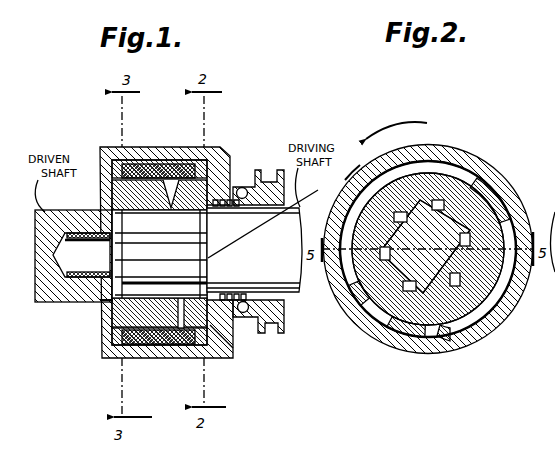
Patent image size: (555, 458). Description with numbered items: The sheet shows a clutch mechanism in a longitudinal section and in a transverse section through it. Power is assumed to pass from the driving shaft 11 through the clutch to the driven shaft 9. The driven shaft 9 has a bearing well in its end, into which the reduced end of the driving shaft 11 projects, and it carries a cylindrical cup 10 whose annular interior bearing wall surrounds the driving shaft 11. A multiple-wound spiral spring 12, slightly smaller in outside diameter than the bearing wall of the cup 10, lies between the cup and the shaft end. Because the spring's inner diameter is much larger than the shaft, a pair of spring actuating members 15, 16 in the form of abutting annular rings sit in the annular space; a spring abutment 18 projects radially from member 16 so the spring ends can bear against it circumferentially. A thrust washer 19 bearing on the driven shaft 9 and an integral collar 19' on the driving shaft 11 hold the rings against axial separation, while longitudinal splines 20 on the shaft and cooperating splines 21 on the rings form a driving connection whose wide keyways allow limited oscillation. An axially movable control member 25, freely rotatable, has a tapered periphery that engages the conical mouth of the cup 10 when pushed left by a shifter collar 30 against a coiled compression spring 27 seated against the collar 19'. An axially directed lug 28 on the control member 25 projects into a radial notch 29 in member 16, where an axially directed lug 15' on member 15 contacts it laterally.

In FIG. 1, the driven shaft 9 is at (50, 306).
In FIG. 1, the cylindrical cup 10 is at (108, 148).
In FIG. 2, the cylindrical cup 10 is at (482, 157).
In FIG. 1, the driving shaft 11 is at (278, 266).
In FIG. 2, the driving shaft 11 is at (503, 223).
In FIG. 1, the multiple-wound spiral spring 12 is at (104, 350).
In FIG. 2, the multiple-wound spiral spring 12 is at (500, 288).
In FIG. 1, the spring actuating member 15 is at (85, 283).
In FIG. 2, the axially directed lug 15' is at (408, 365).
In FIG. 1, the spring actuating member 16 is at (236, 178).
In FIG. 2, the spring actuating member 16 is at (494, 208).
In FIG. 2, the spring abutment 18 is at (440, 154).
In FIG. 1, the thrust washer 19 is at (70, 327).
In FIG. 1, the integral collar 19' is at (268, 217).
In FIG. 1, the longitudinal splines 20 is at (100, 208).
In FIG. 2, the longitudinal splines 20 is at (490, 308).
In FIG. 2, the cooperating splines 21 is at (480, 341).
In FIG. 1, the control member 25 is at (229, 158).
In FIG. 1, the coiled compression spring 27 is at (243, 315).
In FIG. 1, the axially directed lug 28 is at (208, 345).
In FIG. 2, the axially directed lug 28 is at (436, 341).
In FIG. 1, the radial notch 29 is at (173, 352).
In FIG. 2, the radial notch 29 is at (392, 340).
In FIG. 1, the shifter collar 30 is at (271, 327).